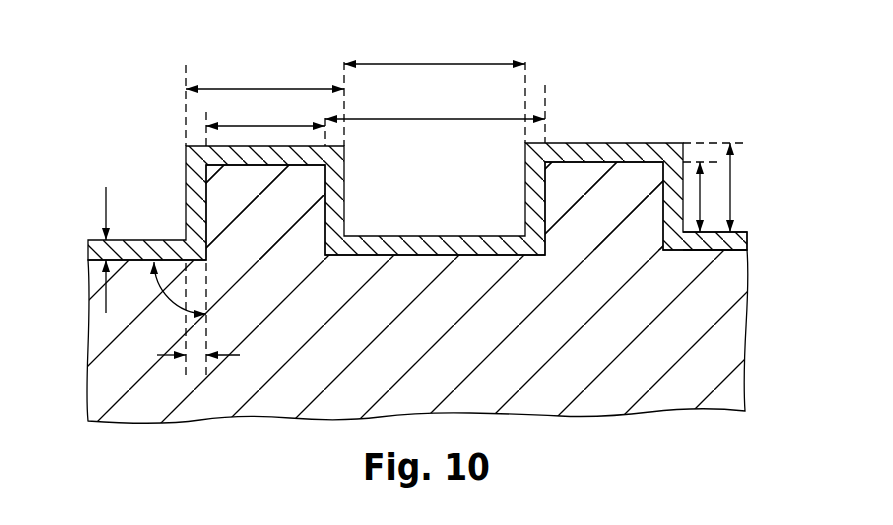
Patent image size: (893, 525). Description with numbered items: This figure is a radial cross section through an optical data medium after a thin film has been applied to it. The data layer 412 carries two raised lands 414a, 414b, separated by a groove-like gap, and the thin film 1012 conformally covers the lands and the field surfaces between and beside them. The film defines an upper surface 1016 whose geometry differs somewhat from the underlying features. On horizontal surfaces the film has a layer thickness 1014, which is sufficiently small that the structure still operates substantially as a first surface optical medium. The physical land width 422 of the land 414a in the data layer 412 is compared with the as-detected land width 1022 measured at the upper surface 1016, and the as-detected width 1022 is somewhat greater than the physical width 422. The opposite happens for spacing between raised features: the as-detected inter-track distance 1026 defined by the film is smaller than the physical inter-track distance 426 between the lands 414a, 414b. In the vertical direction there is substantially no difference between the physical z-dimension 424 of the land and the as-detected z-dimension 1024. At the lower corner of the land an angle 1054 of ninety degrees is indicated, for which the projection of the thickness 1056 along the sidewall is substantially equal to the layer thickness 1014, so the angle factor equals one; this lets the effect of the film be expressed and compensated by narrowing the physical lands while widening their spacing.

The data layer 412 is at (502, 365).
The land 414a is at (289, 211).
The land 414b is at (641, 204).
The upper surface 1016 is at (138, 240).
The thin film 1012 is at (738, 240).
The physical inter-track distance 426 is at (422, 123).
The as-detected inter-track distance 1026 is at (418, 64).
The as-detected land width 1022 is at (305, 89).
The physical land width 422 is at (258, 126).
The physical z-dimension of feature 424 is at (703, 183).
The as-detected z-dimension magnitude 1024 is at (733, 208).
The layer thickness 1014 is at (100, 200).
The angle 1054 is at (170, 298).
The projection of the thickness 1056 is at (241, 352).